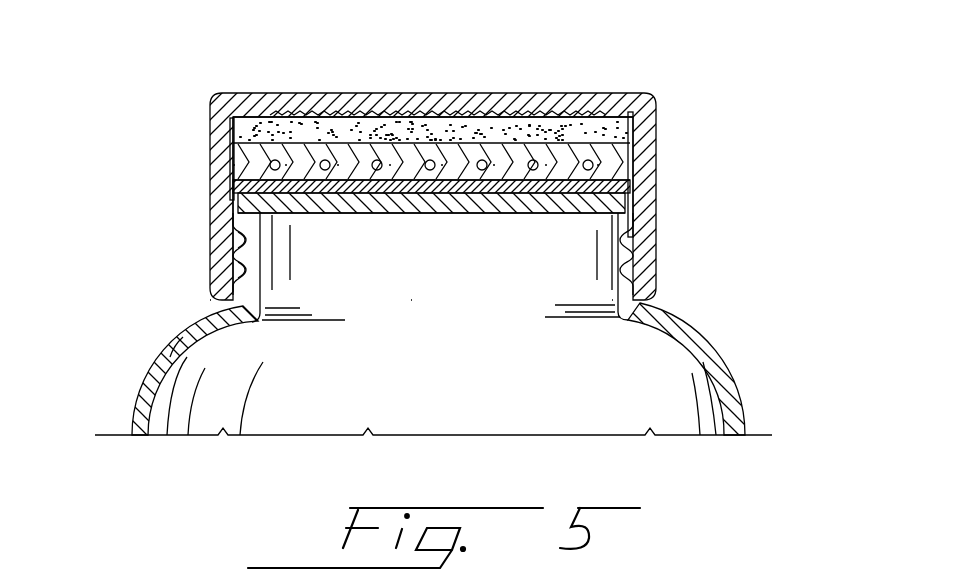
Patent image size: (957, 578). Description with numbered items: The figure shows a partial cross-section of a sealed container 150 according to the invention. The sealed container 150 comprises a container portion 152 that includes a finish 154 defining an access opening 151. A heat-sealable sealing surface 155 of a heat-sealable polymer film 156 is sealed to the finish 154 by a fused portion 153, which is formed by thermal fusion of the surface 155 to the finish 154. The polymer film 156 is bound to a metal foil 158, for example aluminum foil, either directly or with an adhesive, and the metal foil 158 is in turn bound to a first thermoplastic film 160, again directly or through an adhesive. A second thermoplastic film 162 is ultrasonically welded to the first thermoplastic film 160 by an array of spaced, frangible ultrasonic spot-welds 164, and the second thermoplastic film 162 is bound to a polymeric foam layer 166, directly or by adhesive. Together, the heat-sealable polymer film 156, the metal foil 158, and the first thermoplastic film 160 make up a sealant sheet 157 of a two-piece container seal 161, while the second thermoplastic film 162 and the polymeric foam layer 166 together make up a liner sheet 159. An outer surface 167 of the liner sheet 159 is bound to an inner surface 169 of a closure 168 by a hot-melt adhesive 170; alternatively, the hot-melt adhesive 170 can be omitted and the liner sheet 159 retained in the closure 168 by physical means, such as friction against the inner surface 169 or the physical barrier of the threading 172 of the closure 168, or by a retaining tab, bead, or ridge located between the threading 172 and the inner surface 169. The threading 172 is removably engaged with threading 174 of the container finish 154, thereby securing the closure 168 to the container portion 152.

The sealed container 150 is at (170, 300).
The access opening 151 is at (472, 283).
The container portion 152 is at (130, 385).
The fused portion 153 is at (207, 215).
The finish 154 is at (265, 262).
The heat-sealable sealing surface 155 is at (497, 216).
The heat-sealable polymer film 156 is at (640, 216).
The sealant sheet 157 is at (733, 177).
The metal foil 158 is at (640, 186).
The liner sheet 159 is at (145, 100).
The first thermoplastic film 160 is at (640, 160).
The two-piece container seal 161 is at (734, 88).
The second thermoplastic film 162 is at (232, 158).
The ultrasonic spot-welds 164 is at (226, 190).
The polymeric foam layer 166 is at (212, 126).
The outer surface 167 is at (242, 100).
The closure 168 is at (272, 95).
The inner surface 169 is at (606, 121).
The hot-melt adhesive 170 is at (373, 95).
The threading 172 is at (222, 242).
The threading 174 is at (222, 270).